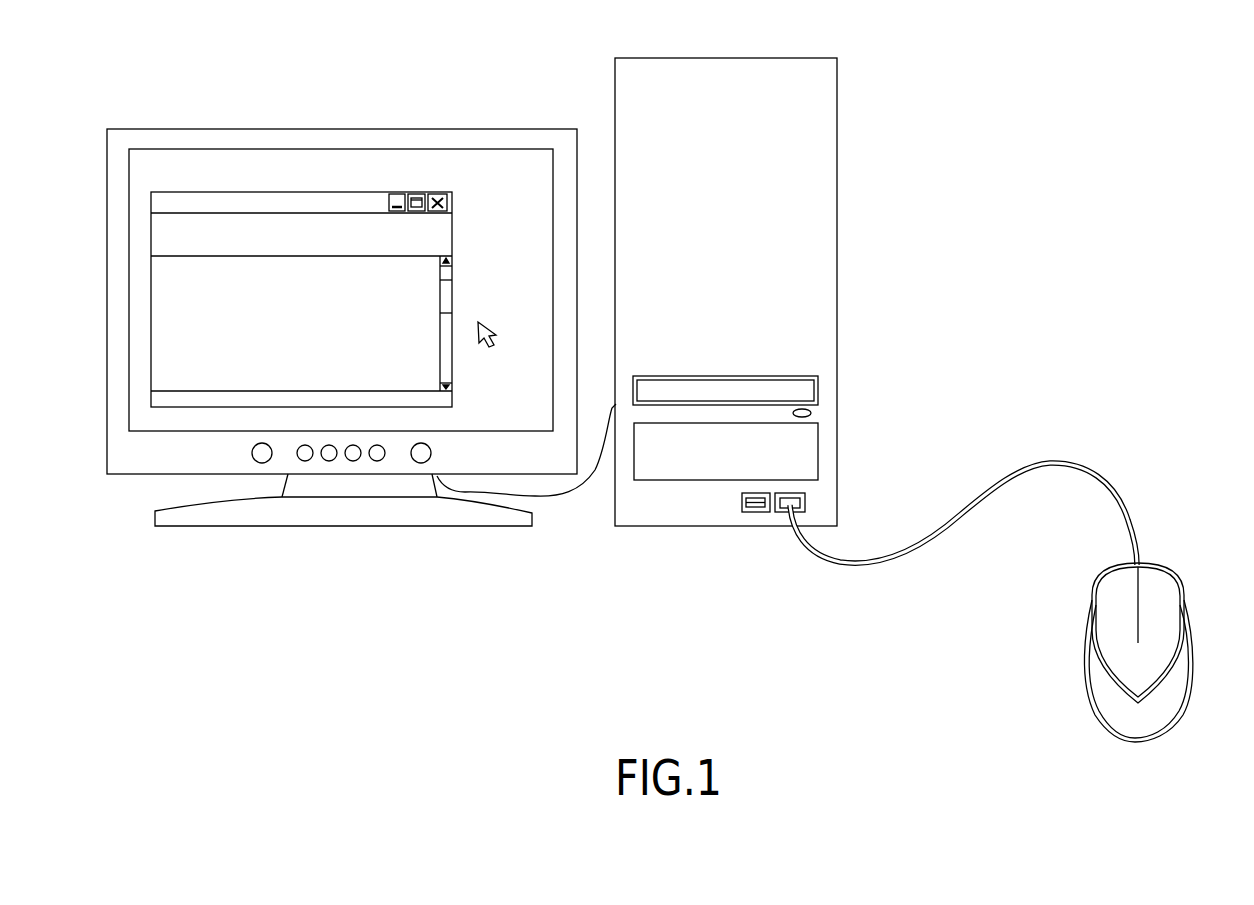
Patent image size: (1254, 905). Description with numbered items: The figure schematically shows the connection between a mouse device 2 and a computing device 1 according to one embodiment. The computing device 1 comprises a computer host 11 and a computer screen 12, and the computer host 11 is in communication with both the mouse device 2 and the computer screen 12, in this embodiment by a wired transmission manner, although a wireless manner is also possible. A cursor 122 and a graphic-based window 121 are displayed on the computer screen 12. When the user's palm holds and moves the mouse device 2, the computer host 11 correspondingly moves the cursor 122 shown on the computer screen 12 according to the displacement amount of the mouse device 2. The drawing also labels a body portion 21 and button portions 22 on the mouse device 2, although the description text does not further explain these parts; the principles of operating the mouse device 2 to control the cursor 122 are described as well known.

The computing device 1 is at (641, 36).
The computer host 11 is at (730, 67).
The computer screen 12 is at (461, 125).
The graphic-based window 121 is at (280, 233).
The cursor 122 is at (493, 347).
The mouse device 2 is at (1158, 541).
The mouse body 21 is at (1172, 690).
The mouse buttons 22 is at (1112, 607).